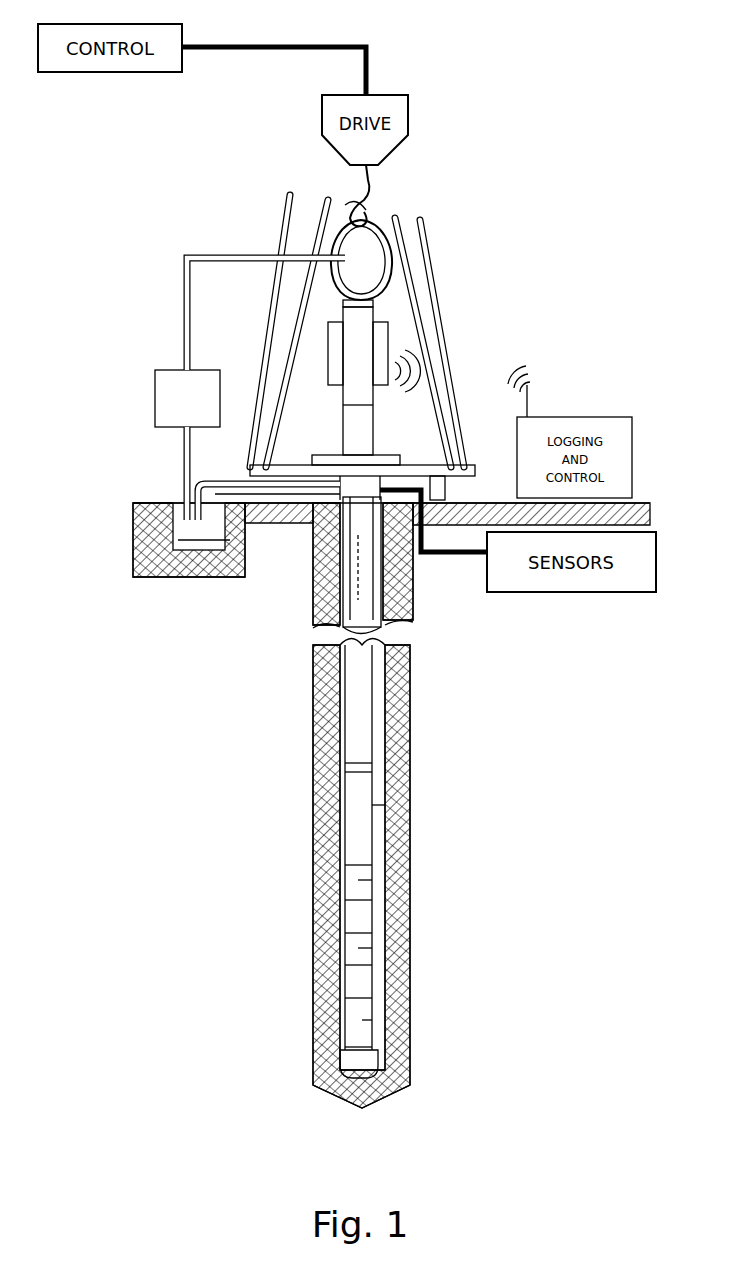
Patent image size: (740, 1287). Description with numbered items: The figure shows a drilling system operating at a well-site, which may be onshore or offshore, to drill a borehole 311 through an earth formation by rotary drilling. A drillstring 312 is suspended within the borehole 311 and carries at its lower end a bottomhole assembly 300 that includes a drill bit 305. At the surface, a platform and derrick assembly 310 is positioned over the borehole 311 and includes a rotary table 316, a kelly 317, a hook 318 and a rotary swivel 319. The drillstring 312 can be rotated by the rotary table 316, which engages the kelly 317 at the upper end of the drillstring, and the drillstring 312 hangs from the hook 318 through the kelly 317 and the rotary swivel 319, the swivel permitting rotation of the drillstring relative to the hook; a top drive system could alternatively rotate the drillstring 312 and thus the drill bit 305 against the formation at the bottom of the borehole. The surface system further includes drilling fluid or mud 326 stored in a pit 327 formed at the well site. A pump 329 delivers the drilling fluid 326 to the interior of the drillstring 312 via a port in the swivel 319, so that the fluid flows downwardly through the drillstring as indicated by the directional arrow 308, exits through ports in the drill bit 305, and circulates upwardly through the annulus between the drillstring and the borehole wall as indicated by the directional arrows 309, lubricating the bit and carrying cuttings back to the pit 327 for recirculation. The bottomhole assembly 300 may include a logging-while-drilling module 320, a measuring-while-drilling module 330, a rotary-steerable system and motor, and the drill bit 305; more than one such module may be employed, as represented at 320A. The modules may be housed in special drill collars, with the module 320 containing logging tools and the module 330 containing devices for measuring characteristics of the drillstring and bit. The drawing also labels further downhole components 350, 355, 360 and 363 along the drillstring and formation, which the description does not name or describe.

The bottomhole assembly 300 is at (228, 1048).
The drill bit 305 is at (352, 1060).
The directional arrow 308 is at (318, 625).
The directional arrows 309 is at (316, 575).
The platform and derrick assembly 310 is at (462, 236).
The borehole 311 is at (385, 497).
The drillstring 312 is at (352, 495).
The rotary table 316 is at (383, 455).
The kelly 317 is at (343, 420).
The hook 318 is at (350, 176).
The rotary swivel 319 is at (352, 236).
The logging-while-drilling module 320 is at (352, 918).
The additional LWD and/or MWD module 320A is at (350, 980).
The drilling fluid or mud 326 is at (185, 575).
The pit 327 is at (170, 505).
The pump 329 is at (170, 368).
The measuring-while-drilling module 330 is at (362, 948).
The downhole motor / sensor sub 350 is at (362, 1020).
The formation 355 is at (318, 760).
The drill collar 360 is at (400, 805).
The measurement tool 363 is at (362, 880).